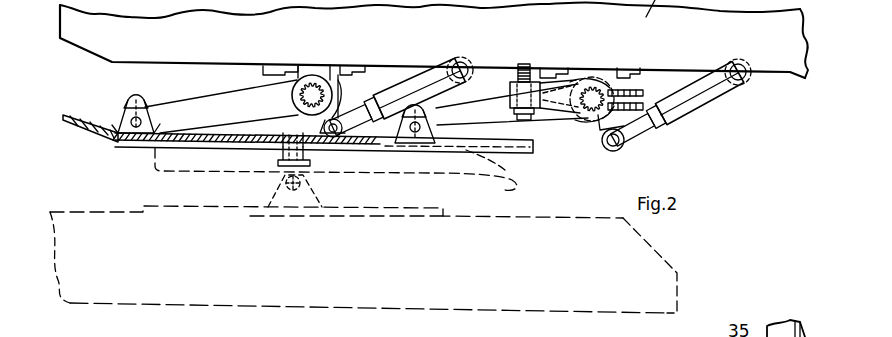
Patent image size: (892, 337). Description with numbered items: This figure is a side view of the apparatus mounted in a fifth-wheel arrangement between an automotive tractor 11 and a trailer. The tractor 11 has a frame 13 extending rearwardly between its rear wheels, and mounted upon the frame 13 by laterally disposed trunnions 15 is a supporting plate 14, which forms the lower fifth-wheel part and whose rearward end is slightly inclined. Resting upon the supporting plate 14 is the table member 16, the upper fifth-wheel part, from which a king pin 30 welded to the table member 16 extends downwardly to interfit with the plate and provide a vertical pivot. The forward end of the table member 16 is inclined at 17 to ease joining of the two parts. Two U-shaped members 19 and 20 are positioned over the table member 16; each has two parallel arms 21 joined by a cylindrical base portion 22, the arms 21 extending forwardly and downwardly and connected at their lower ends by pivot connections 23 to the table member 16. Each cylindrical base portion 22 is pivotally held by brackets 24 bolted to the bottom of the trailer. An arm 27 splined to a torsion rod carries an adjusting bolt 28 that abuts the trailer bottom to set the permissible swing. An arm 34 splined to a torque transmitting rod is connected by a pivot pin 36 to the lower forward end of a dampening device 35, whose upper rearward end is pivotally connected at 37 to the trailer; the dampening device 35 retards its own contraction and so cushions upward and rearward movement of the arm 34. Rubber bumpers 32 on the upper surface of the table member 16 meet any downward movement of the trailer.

The automotive tractor 11 is at (434, 39).
The frame 13 is at (492, 311).
The supporting plate 14 is at (500, 185).
The trunnions 15 is at (268, 185).
The table member 16 is at (134, 150).
The inclined forward end 17 is at (66, 112).
The forward U-shaped member 19 is at (244, 114).
The rearward U-shaped member 20 is at (490, 124).
The arms 21 is at (208, 85).
The cylindrical base portion 22 is at (318, 78).
The pivot connection 23 is at (141, 97).
The brackets 24 is at (300, 74).
The arm 27 is at (552, 110).
The adjusting bolt 28 is at (524, 64).
The king pin 30 is at (308, 158).
The rubber bumpers 32 is at (126, 102).
The arm 34 is at (338, 120).
The dampening device 35 is at (408, 75).
The pivot pin 36 is at (624, 147).
The pivot connection 37 is at (458, 60).